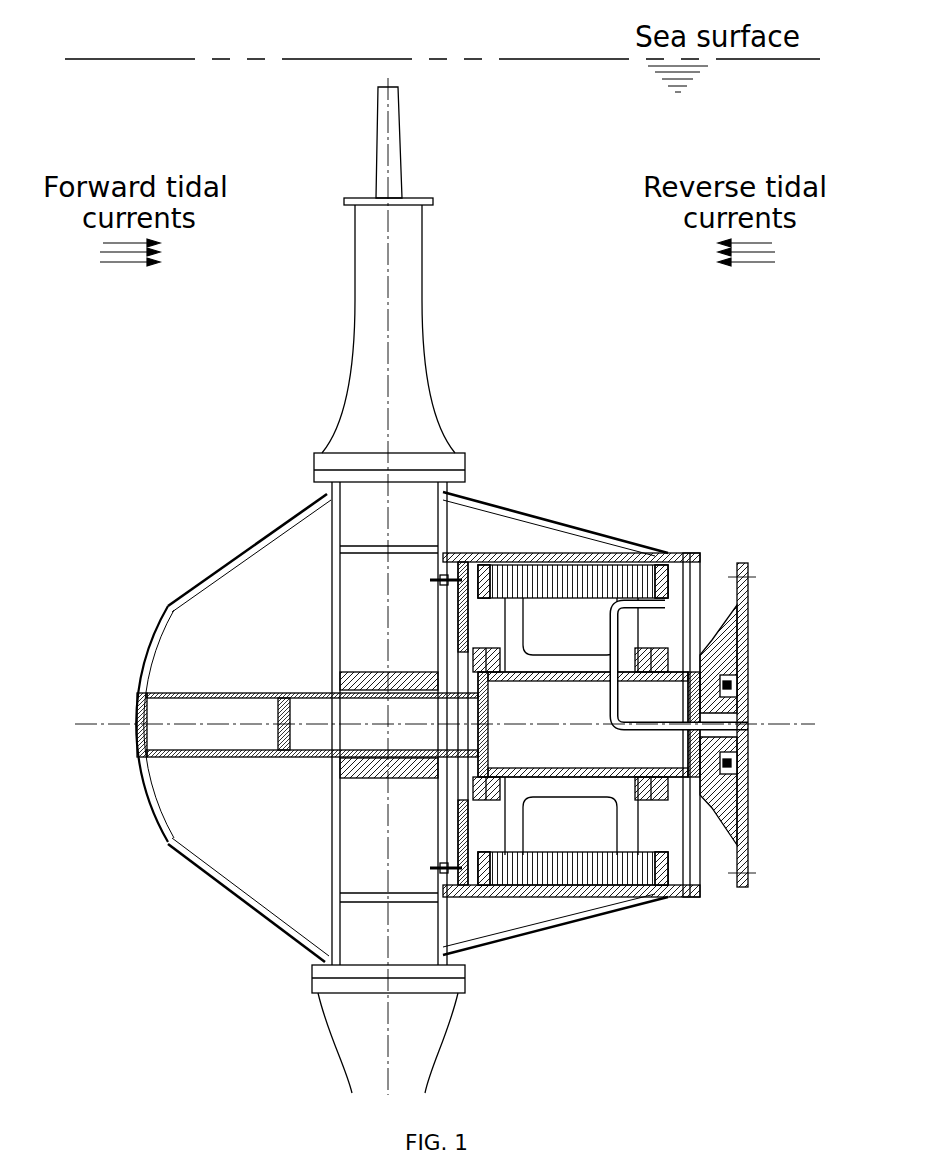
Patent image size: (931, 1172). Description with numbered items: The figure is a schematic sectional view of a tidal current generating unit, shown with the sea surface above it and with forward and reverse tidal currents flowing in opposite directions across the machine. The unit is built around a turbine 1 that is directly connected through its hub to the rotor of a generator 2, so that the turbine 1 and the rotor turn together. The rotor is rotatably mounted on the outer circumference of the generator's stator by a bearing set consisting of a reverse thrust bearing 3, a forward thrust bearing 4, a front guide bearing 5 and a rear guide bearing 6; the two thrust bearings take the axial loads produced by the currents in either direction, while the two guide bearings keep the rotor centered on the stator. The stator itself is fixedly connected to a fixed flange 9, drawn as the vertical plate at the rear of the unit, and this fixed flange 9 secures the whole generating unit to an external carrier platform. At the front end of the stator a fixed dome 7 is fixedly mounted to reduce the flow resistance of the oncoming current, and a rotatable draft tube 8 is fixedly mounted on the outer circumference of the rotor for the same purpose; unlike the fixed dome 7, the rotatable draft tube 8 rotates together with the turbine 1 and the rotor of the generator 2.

The turbine 1 is at (409, 517).
The generator 2 is at (486, 652).
The reverse thrust bearing 3 is at (522, 595).
The forward thrust bearing 4 is at (672, 553).
The front guide bearing 5 is at (333, 607).
The rear guide bearing 6 is at (700, 563).
The fixed dome 7 is at (262, 538).
The rotatable draft tube 8 is at (470, 500).
The fixed flange 9 is at (742, 563).